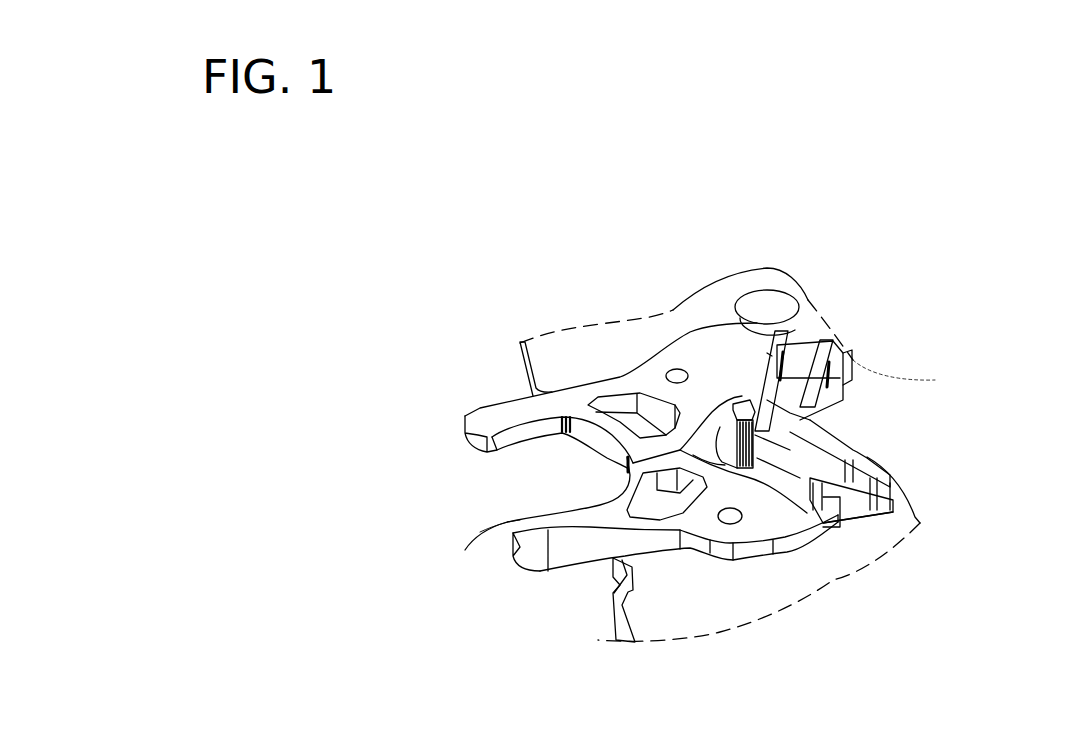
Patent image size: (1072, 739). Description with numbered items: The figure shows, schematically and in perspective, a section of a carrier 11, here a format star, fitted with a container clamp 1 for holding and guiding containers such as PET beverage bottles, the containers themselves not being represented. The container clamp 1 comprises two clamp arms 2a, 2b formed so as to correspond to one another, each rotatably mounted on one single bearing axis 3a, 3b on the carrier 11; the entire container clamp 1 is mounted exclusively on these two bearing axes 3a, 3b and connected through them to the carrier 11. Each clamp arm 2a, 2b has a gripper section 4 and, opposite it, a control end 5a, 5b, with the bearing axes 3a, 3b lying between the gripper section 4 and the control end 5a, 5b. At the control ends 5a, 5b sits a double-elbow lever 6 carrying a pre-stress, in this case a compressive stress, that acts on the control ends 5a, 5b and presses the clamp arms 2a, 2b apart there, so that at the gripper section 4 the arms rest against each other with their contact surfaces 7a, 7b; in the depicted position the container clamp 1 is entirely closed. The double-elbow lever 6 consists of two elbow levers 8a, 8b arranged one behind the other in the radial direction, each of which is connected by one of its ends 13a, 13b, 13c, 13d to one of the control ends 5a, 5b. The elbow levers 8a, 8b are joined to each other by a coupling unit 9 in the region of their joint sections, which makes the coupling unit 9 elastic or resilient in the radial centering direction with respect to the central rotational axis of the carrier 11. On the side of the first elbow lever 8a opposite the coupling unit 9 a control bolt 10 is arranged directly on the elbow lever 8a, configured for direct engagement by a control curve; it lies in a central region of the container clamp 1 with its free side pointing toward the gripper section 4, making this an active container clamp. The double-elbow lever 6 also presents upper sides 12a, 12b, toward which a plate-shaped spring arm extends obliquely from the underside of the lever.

The container clamp 1 is at (380, 246).
The clamp arm 2a is at (490, 417).
The clamp arm 2b is at (538, 547).
The bearing axis 3a is at (678, 369).
The bearing axis 3b is at (731, 524).
The gripper section 4 is at (320, 504).
The control end 5a is at (935, 360).
The control end 5b is at (952, 538).
The double-elbow lever 6 is at (842, 328).
The contact surface 7a is at (596, 489).
The contact surface 7b is at (483, 532).
The elbow lever 8a is at (847, 452).
The elbow lever 8b is at (813, 477).
The coupling unit 9 is at (872, 250).
The control bolt 10 is at (740, 405).
The carrier 11 is at (857, 547).
The upper side 12a is at (852, 352).
The upper side 12b is at (757, 440).
The end of elbow lever 13a is at (780, 348).
The end of elbow lever 13b is at (823, 345).
The end of elbow lever 13c is at (862, 462).
The end of elbow lever 13d is at (831, 486).